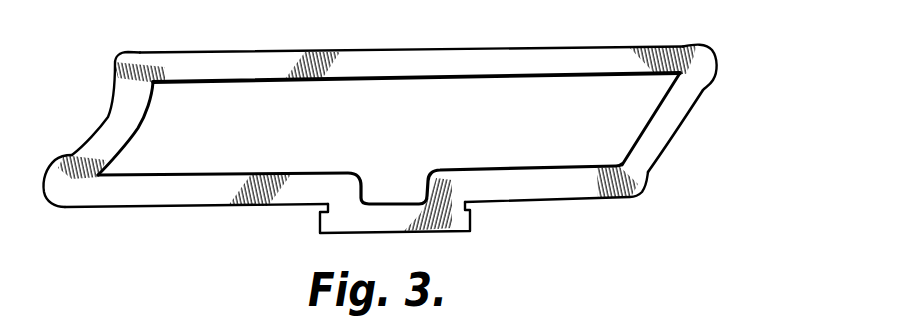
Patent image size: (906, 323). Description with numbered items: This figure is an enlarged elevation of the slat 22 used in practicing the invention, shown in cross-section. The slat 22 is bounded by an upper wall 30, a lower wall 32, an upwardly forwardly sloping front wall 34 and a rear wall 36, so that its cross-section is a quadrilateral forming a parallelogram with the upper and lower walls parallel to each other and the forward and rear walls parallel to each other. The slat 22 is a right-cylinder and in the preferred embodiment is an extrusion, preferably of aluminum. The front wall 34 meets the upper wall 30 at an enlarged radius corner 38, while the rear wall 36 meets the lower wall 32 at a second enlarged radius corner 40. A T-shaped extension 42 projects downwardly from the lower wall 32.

The slat 22 is at (398, 131).
The upper wall 30 is at (358, 54).
The lower wall 32 is at (213, 207).
The front wall 34 is at (677, 131).
The rear wall 36 is at (98, 120).
The enlarged radius corner 38 is at (713, 47).
The enlarged radius corner 40 is at (53, 190).
The T-shaped extension 42 is at (472, 222).